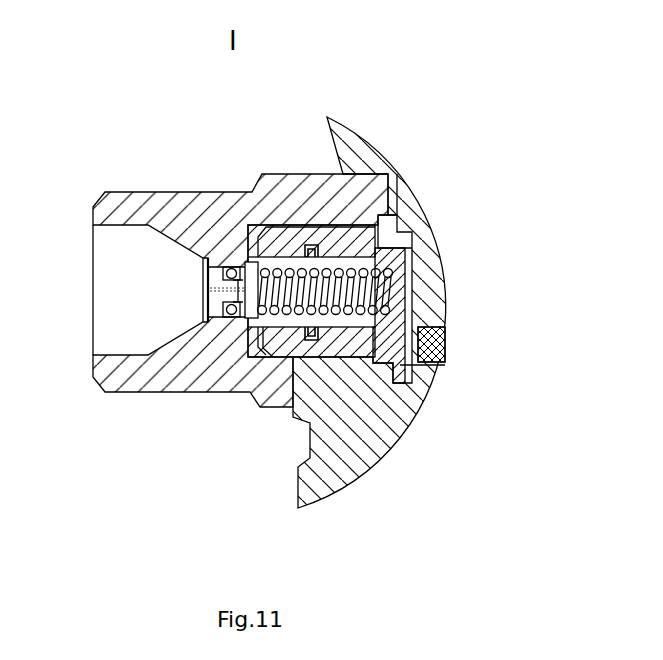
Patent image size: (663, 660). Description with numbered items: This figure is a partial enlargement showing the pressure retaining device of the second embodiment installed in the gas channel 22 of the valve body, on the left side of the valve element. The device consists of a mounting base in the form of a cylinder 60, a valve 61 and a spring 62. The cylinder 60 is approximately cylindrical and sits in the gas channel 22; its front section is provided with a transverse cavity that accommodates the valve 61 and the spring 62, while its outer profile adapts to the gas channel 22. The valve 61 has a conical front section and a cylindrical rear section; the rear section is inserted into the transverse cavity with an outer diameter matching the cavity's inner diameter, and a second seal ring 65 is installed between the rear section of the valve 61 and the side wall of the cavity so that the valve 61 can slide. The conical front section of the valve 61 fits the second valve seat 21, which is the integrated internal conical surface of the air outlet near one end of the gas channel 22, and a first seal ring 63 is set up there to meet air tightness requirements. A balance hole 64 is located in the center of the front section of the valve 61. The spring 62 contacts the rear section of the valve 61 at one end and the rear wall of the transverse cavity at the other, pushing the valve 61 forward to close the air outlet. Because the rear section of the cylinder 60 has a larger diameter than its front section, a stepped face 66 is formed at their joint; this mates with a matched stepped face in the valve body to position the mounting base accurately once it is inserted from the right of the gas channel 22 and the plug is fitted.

The second valve seat 21 is at (230, 250).
The gas channel 22 is at (267, 237).
The cylinder 60 is at (290, 222).
The valve 61 is at (251, 320).
The spring 62 is at (293, 407).
The first seal ring 63 is at (243, 305).
The balance hole 64 is at (228, 316).
The second seal ring 65 is at (316, 341).
The stepped face 66 is at (343, 174).